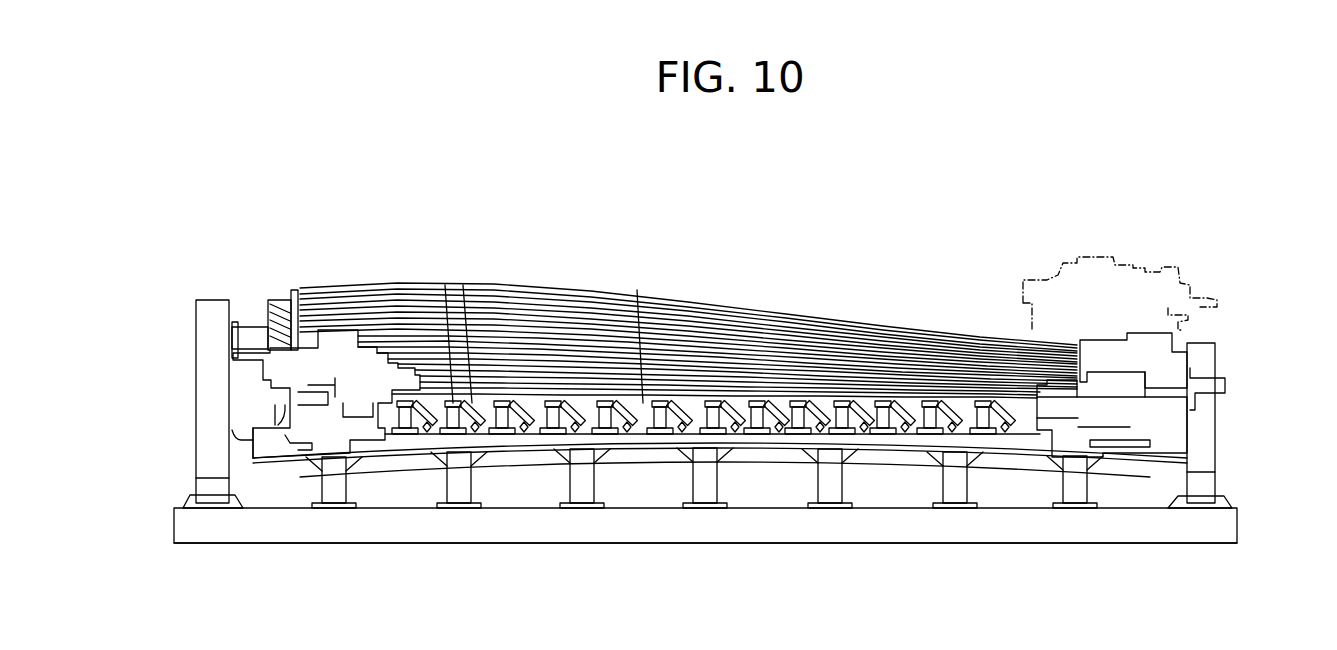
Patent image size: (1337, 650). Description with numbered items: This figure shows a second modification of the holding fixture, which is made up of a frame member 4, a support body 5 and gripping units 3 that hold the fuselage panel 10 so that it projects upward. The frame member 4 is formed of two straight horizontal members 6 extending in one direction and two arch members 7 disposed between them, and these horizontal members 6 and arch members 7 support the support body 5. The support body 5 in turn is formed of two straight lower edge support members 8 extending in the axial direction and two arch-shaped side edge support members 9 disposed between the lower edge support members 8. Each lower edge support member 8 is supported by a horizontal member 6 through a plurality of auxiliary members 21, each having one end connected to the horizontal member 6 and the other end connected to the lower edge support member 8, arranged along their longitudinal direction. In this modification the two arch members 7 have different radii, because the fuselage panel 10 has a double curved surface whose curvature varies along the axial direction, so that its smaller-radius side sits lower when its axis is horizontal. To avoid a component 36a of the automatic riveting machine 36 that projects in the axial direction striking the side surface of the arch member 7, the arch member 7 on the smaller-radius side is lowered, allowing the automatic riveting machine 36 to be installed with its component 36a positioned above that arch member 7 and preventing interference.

The gripping unit 3 is at (265, 312).
The frame member 4 is at (628, 548).
The support body 5 is at (420, 488).
The horizontal member 6 is at (441, 546).
The arch member 7 is at (205, 408).
The lower edge support member 8 is at (772, 303).
The side edge support member 9 is at (297, 290).
The fuselage panel 10 is at (820, 300).
The auxiliary member 21 is at (699, 473).
The automatic riveting machine 36 is at (1130, 285).
The component of the automatic riveting machine 36a is at (1220, 310).